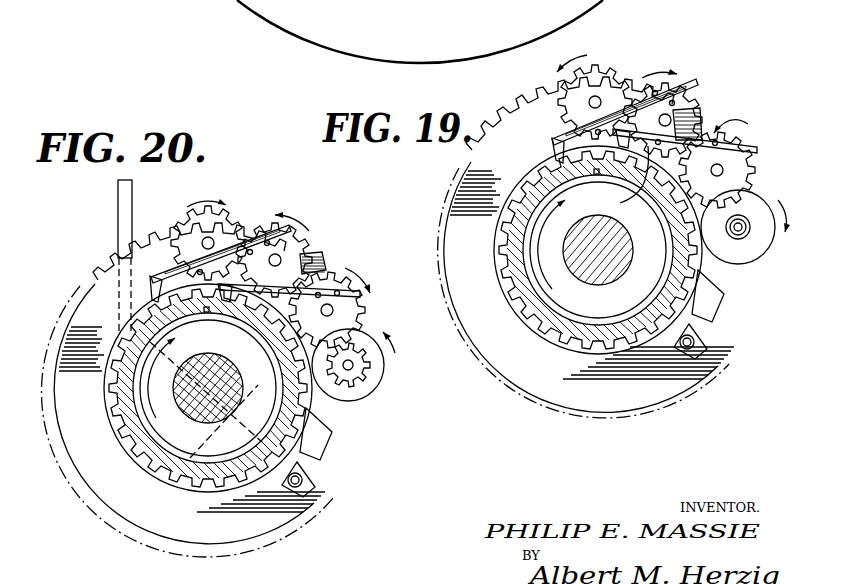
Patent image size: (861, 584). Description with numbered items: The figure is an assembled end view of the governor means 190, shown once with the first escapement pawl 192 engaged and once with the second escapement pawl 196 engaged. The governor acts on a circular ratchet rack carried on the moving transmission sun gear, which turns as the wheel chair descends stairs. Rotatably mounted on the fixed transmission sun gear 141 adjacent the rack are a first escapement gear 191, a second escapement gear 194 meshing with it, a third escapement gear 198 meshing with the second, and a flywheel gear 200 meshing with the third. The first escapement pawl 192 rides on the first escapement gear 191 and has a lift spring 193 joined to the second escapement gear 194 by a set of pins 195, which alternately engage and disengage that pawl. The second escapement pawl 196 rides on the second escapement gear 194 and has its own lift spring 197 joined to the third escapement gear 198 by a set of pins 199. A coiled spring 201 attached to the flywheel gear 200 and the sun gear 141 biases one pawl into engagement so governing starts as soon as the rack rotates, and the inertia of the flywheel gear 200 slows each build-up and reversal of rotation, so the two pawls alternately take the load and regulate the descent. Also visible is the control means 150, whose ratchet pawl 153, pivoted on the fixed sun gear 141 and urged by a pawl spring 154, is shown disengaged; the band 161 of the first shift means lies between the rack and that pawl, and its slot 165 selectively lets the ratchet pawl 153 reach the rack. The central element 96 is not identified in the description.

In FIG. 20, the shaft 96 is at (208, 382).
In FIG. 20, the fixed transmission sun gear 141 is at (287, 532).
In FIG. 19, the fixed transmission sun gear 141 is at (698, 376).
In FIG. 20, the control means 150 is at (328, 516).
In FIG. 19, the control means 150 is at (658, 392).
In FIG. 20, the ratchet pawl 153 is at (328, 445).
In FIG. 19, the ratchet pawl 153 is at (712, 303).
In FIG. 20, the pawl spring 154 is at (318, 486).
In FIG. 19, the pawl spring 154 is at (700, 331).
In FIG. 20, the band 161 is at (142, 472).
In FIG. 19, the band 161 is at (578, 360).
In FIG. 20, the slot 165 is at (231, 306).
In FIG. 19, the slot 165 is at (540, 157).
In FIG. 20, the governor means 190 is at (318, 222).
In FIG. 19, the governor means 190 is at (678, 47).
In FIG. 20, the first escapement gear 191 is at (186, 222).
In FIG. 19, the first escapement gear 191 is at (612, 78).
In FIG. 20, the first escapement pawl 192 is at (105, 277).
In FIG. 19, the first escapement pawl 192 is at (556, 147).
In FIG. 20, the lift spring 193 is at (288, 227).
In FIG. 19, the lift spring 193 is at (697, 82).
In FIG. 20, the second escapement gear 194 is at (343, 268).
In FIG. 19, the second escapement gear 194 is at (730, 107).
In FIG. 20, the set of pins 195 is at (268, 250).
In FIG. 19, the set of pins 195 is at (690, 92).
In FIG. 19, the second escapement pawl 196 is at (621, 179).
In FIG. 20, the lift spring 197 is at (310, 259).
In FIG. 19, the lift spring 197 is at (722, 121).
In FIG. 20, the third escapement gear 198 is at (362, 325).
In FIG. 19, the third escapement gear 198 is at (745, 178).
In FIG. 20, the set of pins 199 is at (362, 297).
In FIG. 19, the set of pins 199 is at (752, 154).
In FIG. 20, the flywheel gear 200 is at (374, 391).
In FIG. 19, the flywheel gear 200 is at (758, 258).
In FIG. 19, the coiled spring 201 is at (730, 230).